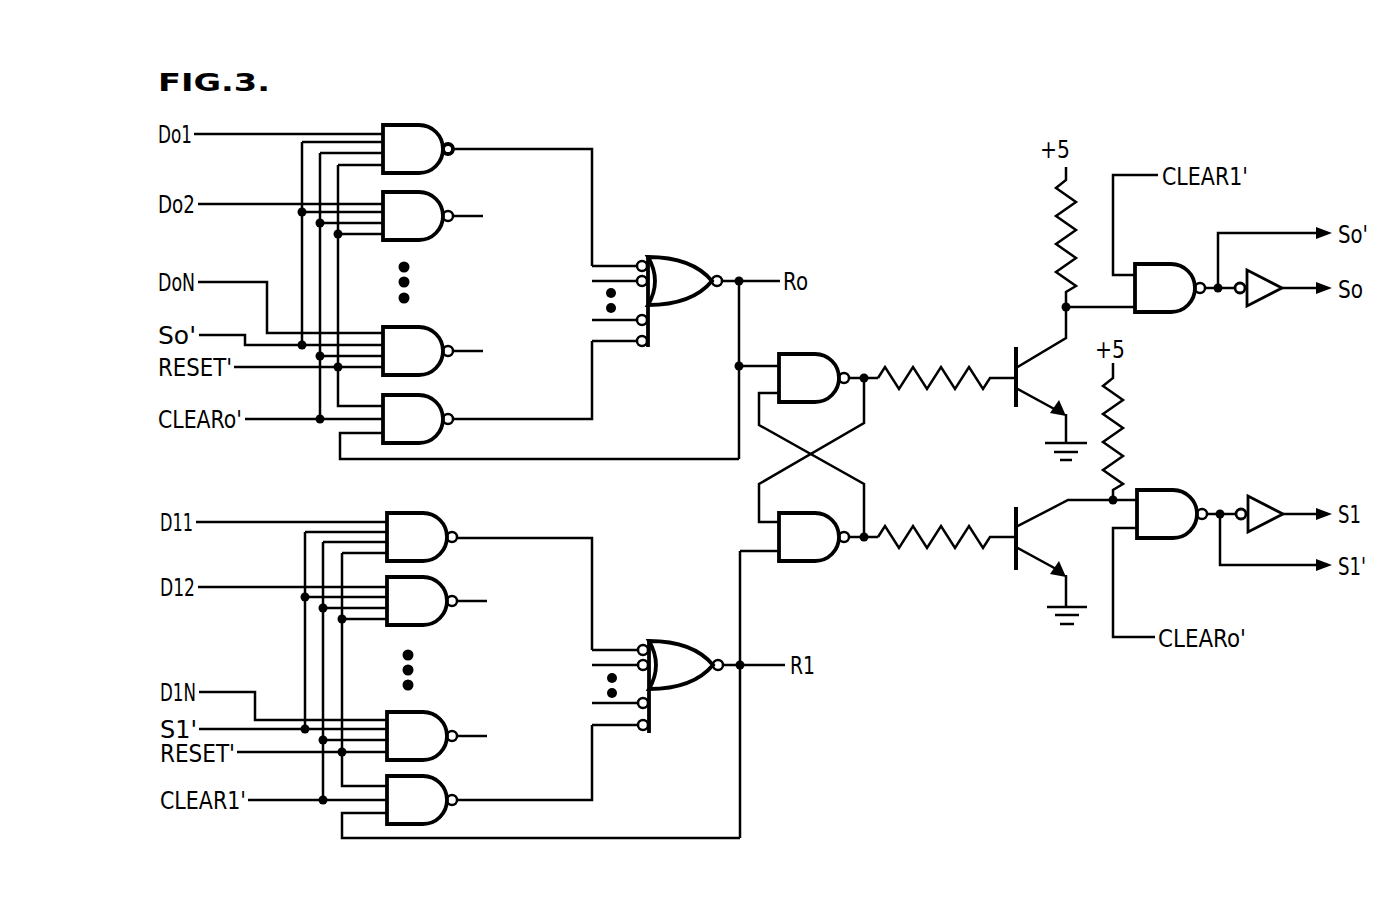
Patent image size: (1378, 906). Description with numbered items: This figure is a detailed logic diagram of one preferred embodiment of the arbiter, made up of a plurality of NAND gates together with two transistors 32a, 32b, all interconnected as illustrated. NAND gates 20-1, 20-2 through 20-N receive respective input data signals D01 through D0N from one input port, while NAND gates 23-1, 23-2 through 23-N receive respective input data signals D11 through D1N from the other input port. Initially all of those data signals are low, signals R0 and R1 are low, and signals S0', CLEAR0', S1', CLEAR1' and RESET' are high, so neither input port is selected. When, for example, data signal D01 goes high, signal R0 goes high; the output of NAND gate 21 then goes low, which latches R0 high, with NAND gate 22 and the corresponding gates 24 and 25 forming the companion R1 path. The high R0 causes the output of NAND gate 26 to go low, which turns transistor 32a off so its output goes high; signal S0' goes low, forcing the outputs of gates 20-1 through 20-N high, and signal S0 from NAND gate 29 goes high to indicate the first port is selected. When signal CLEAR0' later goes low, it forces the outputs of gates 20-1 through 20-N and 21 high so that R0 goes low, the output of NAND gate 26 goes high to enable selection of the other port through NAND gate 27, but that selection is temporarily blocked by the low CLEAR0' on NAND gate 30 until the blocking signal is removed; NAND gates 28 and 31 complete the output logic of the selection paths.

The NAND gate 20-1 is at (431, 164).
The NAND gate 20-2 is at (431, 231).
The NAND gate 20-N is at (431, 366).
The NAND gate 21 is at (418, 434).
The NAND gate 22 is at (686, 296).
The NAND gate 23-1 is at (435, 552).
The NAND gate 23-2 is at (435, 616).
The NAND gate 23-N is at (435, 751).
The NAND gate 24 is at (423, 815).
The NAND gate 25 is at (687, 680).
The NAND gate 26 is at (815, 393).
The NAND gate 27 is at (815, 552).
The NAND gate 28 is at (1171, 303).
The NAND gate 29 is at (1262, 300).
The NAND gate 30 is at (1173, 529).
The NAND gate 31 is at (1278, 464).
The transistor 32a is at (1004, 368).
The transistor 32b is at (1008, 547).